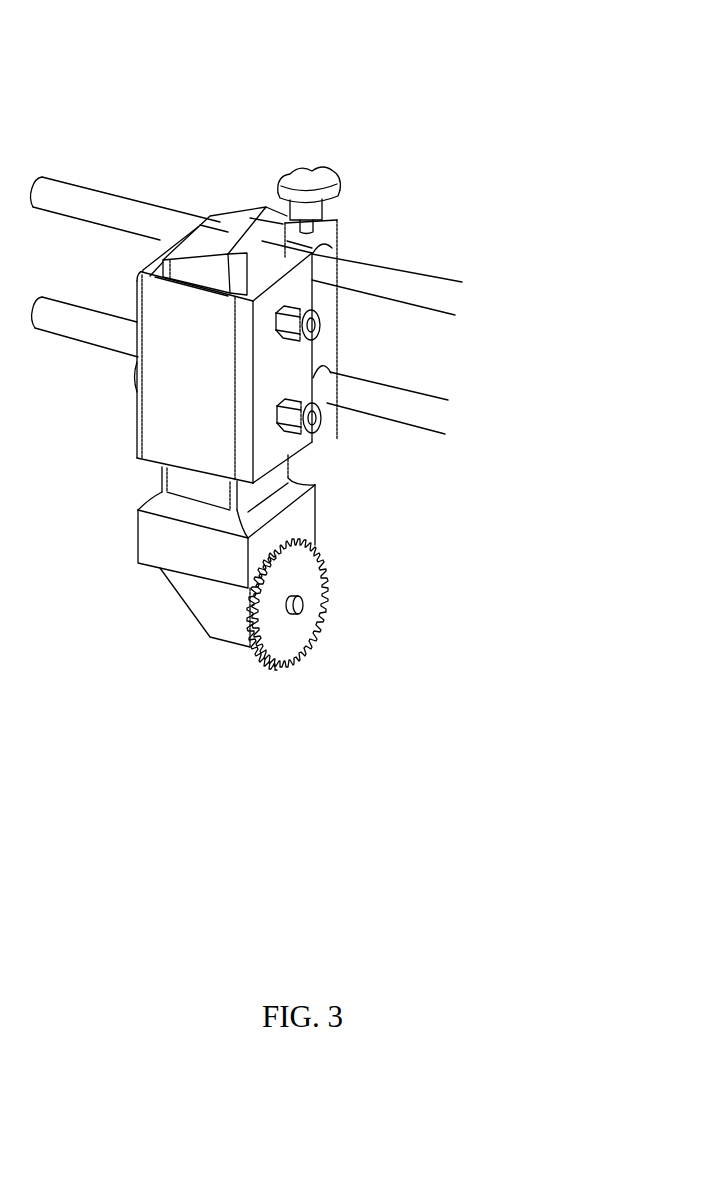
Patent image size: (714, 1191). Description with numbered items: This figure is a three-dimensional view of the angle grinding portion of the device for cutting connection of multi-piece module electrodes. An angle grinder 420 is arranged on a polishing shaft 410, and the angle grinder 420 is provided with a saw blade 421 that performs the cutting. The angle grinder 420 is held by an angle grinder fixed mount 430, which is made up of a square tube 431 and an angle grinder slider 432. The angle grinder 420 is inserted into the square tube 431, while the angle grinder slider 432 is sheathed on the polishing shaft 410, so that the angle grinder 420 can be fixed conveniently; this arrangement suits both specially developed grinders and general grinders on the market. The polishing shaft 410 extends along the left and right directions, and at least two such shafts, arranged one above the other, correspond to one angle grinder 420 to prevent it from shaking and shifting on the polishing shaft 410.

The polishing shaft 410 is at (88, 200).
The angle grinder 420 is at (160, 545).
The saw blade 421 is at (292, 635).
The angle grinder fixed mount 430 is at (590, 225).
The square tube 431 is at (280, 377).
The angle grinder slider 432 is at (320, 304).